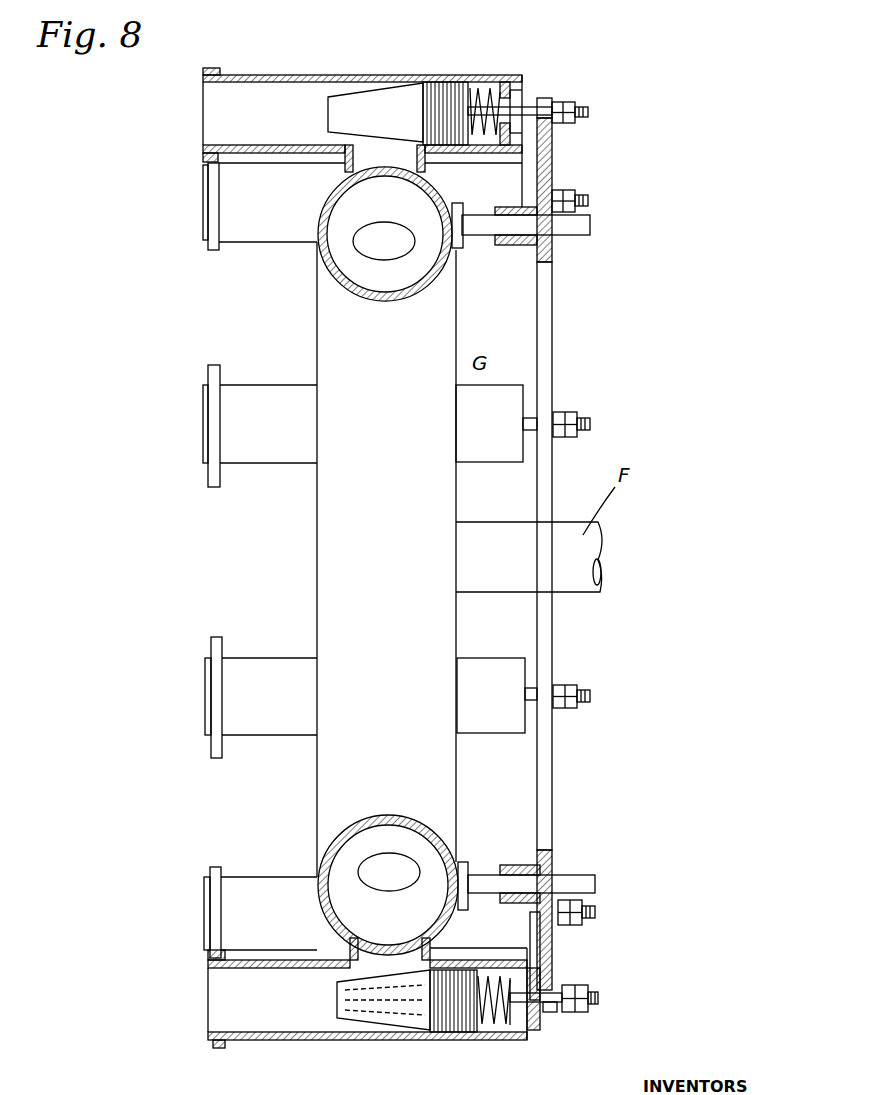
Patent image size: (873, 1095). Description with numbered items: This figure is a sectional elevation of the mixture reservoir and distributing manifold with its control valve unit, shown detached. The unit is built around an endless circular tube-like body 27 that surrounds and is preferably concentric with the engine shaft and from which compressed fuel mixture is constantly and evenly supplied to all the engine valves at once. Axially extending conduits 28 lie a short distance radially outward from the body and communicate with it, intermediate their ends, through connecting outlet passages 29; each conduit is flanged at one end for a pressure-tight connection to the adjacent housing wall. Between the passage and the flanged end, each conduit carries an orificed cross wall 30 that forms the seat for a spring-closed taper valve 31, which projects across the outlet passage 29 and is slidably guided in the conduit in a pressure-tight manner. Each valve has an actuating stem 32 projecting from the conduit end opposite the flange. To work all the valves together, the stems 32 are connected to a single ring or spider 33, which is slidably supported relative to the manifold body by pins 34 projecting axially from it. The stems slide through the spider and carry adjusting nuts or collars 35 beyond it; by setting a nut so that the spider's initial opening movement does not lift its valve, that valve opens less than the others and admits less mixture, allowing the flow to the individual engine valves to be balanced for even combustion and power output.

The endless circular tube-like body 27 is at (338, 763).
The axially extending conduits 28 is at (223, 115).
The connecting outlet passages 29 is at (373, 152).
The orificed cross wall 30 is at (345, 88).
The spring-closed taper valve 31 is at (388, 100).
The actuating stem 32 is at (527, 110).
The ring or spider 33 is at (560, 960).
The pins 34 is at (515, 225).
The adjusting nuts or collars 35 is at (566, 125).